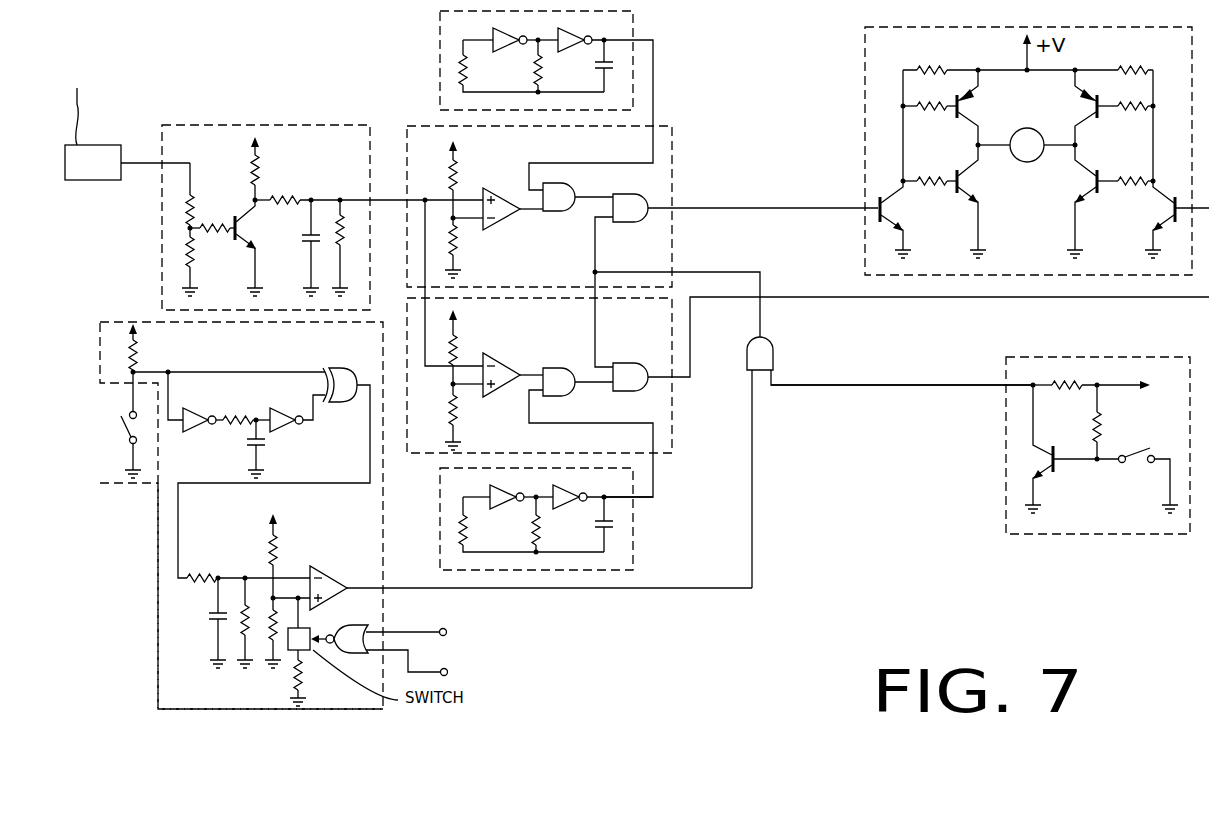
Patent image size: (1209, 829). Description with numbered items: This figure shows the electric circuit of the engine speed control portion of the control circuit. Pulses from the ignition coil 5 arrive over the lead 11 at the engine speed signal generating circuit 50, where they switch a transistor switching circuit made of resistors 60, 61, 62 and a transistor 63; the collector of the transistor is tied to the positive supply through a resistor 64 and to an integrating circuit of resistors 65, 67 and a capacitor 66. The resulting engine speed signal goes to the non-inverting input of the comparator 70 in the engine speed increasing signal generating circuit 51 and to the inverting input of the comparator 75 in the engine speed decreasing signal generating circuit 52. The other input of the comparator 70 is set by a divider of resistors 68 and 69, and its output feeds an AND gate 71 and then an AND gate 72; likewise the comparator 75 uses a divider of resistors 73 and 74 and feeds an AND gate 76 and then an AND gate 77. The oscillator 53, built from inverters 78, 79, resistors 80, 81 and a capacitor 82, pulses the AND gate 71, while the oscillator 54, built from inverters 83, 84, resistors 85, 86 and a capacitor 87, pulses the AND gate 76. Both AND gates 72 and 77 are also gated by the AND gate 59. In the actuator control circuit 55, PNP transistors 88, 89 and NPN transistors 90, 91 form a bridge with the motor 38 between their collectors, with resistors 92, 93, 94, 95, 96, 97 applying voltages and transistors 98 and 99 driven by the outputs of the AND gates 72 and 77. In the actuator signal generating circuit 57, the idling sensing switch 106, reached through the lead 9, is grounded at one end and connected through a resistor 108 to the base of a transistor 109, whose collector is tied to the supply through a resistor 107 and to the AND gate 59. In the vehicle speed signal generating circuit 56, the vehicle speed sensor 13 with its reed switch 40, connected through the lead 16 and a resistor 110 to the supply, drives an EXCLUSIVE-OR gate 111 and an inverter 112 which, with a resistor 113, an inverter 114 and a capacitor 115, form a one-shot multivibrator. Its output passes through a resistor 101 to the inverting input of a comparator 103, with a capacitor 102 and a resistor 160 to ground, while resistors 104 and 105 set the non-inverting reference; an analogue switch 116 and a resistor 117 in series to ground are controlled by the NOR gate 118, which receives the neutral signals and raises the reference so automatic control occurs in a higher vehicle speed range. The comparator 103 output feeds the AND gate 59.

The ignition coil 5 is at (107, 144).
The lead 11 is at (140, 162).
The engine speed signal generating circuit 50 is at (355, 125).
The resistor 60 is at (192, 207).
The resistor 61 is at (195, 262).
The resistor 62 is at (212, 243).
The transistor 63 is at (247, 222).
The resistor 64 is at (254, 169).
The resistor 65 is at (287, 198).
The capacitor 66 is at (301, 236).
The resistor 67 is at (346, 242).
The oscillator 53 is at (440, 41).
The inverter 78 is at (516, 36).
The inverter 79 is at (579, 36).
The resistor 80 is at (468, 68).
The resistor 81 is at (532, 72).
The capacitor 82 is at (594, 72).
The engine speed increasing signal generating circuit 51 is at (676, 127).
The resistor 68 is at (458, 184).
The resistor 69 is at (464, 244).
The comparator 70 is at (518, 222).
The AND gate 71 is at (554, 213).
The AND gate 72 is at (631, 223).
The engine speed decreasing signal generating circuit 52 is at (672, 435).
The resistor 73 is at (458, 353).
The resistor 74 is at (460, 409).
The comparator 75 is at (499, 367).
The AND gate 76 is at (570, 370).
The AND gate 77 is at (642, 353).
The oscillator 54 is at (633, 540).
The inverter 83 is at (516, 497).
The inverter 84 is at (581, 497).
The resistor 85 is at (467, 528).
The resistor 86 is at (539, 525).
The capacitor 87 is at (614, 524).
The AND gate 59 is at (798, 360).
The actuator control circuit 55 is at (864, 82).
The PNP transistor 88 is at (970, 120).
The PNP transistor 89 is at (1074, 104).
The NPN transistor 90 is at (970, 194).
The NPN transistor 91 is at (1080, 180).
The resistor 92 is at (944, 62).
The resistor 93 is at (936, 110).
The resistor 94 is at (943, 175).
The resistor 95 is at (1134, 66).
The resistor 96 is at (1125, 121).
The resistor 97 is at (1138, 176).
The transistor 98 is at (902, 218).
The transistor 99 is at (1158, 218).
The motor 38 is at (1027, 162).
The actuator signal generating circuit 57 is at (1006, 505).
The lead 9 is at (953, 386).
The resistor 107 is at (1067, 382).
The resistor 108 is at (1125, 427).
The transistor 109 is at (1064, 440).
The idling sensing switch 106 is at (1138, 482).
The vehicle speed signal generating circuit 56 is at (145, 322).
The vehicle speed sensor 13 is at (158, 658).
The resistor 110 is at (139, 358).
The lead 16 is at (129, 413).
The reed switch 40 is at (123, 433).
The inverter 112 is at (209, 397).
The resistor 113 is at (238, 428).
The inverter 114 is at (283, 397).
The capacitor 115 is at (265, 444).
The EXCLUSIVE-OR gate 111 is at (322, 402).
The resistor 101 is at (215, 562).
The capacitor 102 is at (209, 614).
The resistor 160 is at (242, 644).
The resistor 104 is at (279, 550).
The resistor 105 is at (270, 645).
The comparator 103 is at (345, 569).
The analogue switch 116 is at (312, 628).
The resistor 117 is at (310, 673).
The NOR gate 118 is at (345, 655).